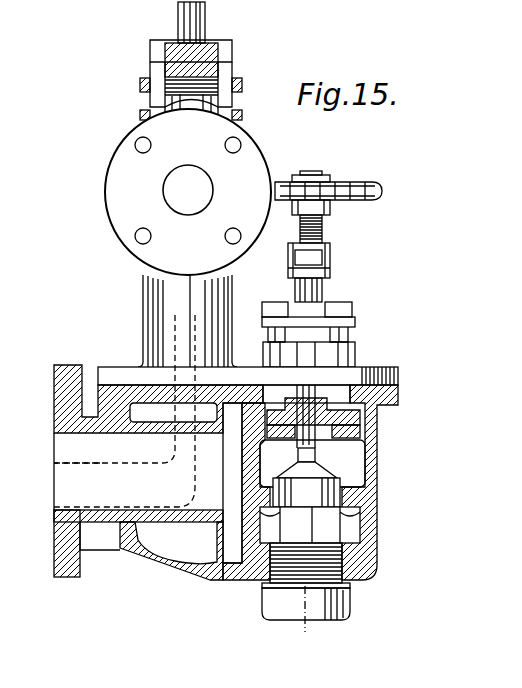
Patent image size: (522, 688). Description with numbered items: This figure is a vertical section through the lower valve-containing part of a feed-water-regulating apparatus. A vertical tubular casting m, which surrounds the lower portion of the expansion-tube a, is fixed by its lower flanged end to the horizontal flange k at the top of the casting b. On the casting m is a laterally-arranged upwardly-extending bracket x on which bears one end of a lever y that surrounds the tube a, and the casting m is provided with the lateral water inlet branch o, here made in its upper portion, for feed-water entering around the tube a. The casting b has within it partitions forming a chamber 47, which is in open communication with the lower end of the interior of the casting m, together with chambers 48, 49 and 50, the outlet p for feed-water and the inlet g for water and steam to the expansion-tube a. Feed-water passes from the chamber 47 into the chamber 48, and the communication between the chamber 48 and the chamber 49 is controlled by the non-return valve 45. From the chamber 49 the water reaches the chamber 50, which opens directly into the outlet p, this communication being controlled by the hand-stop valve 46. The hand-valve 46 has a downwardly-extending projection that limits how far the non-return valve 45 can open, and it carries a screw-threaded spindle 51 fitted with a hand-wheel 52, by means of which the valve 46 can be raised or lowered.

The expansion-tube a is at (205, 25).
The lever y is at (191, 77).
The bracket x is at (232, 79).
The water inlet branch o is at (188, 190).
The hand-wheel 52 is at (363, 192).
The screw-threaded spindle 51 is at (323, 233).
The chamber 50 is at (353, 397).
The hand-stop valve 46 is at (378, 414).
The horizontal flange k is at (110, 383).
The tubular casting m is at (126, 407).
The inlet g is at (80, 505).
The outlet p is at (138, 505).
The chamber 47 is at (171, 551).
The chamber 49 is at (292, 473).
The non-return valve 45 is at (338, 480).
The casting b is at (378, 515).
The chamber 48 is at (352, 530).